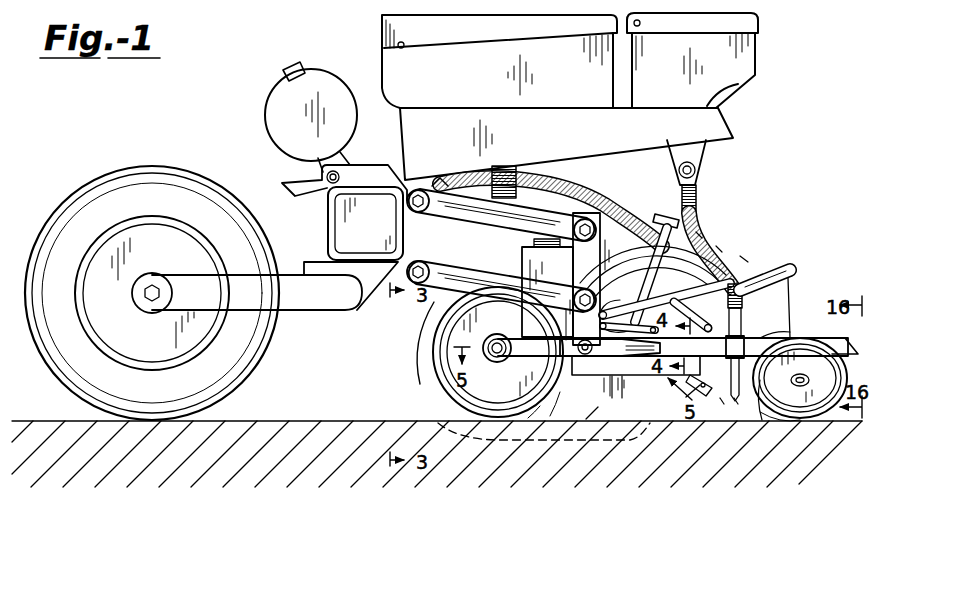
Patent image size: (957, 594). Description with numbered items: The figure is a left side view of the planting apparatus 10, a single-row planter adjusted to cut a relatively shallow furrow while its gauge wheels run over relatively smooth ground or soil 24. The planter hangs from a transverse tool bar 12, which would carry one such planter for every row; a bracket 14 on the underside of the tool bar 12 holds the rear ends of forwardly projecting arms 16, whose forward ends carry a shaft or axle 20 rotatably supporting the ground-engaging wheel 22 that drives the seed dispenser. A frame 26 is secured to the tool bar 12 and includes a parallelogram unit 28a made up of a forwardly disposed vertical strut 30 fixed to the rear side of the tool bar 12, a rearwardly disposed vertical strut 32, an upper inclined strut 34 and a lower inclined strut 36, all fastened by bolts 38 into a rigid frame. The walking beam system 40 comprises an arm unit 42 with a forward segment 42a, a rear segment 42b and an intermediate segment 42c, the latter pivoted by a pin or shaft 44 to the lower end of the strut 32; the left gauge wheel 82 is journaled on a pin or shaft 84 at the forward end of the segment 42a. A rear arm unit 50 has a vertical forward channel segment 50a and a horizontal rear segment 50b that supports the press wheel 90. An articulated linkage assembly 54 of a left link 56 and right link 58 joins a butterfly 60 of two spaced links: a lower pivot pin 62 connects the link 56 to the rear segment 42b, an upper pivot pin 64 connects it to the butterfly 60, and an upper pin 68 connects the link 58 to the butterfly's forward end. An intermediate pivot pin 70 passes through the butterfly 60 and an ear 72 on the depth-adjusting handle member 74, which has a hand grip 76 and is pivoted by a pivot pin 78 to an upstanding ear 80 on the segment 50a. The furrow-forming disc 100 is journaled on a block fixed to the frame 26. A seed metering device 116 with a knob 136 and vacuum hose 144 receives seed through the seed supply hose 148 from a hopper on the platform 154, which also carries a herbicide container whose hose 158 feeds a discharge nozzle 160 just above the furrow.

The planting apparatus 10 is at (352, 46).
The tool bar 12 is at (328, 222).
The bracket 14 is at (372, 306).
The forwardly projecting arms 16 is at (316, 308).
The shaft or axle 20 is at (160, 289).
The ground-engaging wheel 22 is at (75, 190).
The ground or soil 24 is at (250, 421).
The frame 26 is at (418, 294).
The parallelogram unit 28a is at (460, 184).
The forwardly disposed vertical strut 30 is at (428, 262).
The rearwardly disposed vertical strut 32 is at (566, 208).
The upper inclined strut 34 is at (504, 232).
The lower inclined strut 36 is at (455, 270).
The bolts 38 is at (404, 250).
The walking beam system 40 is at (602, 410).
The arm unit 42 is at (535, 377).
The forward segment or portion 42a is at (495, 368).
The rear segment or portion 42b is at (616, 398).
The intermediate segment or portion 42c is at (565, 425).
The pin or shaft 44 is at (592, 424).
The rear arm unit 50 is at (776, 334).
The forward channel portion or segment 50a is at (712, 423).
The rear segment or portion 50b is at (822, 338).
The articulated linkage assembly 54 is at (644, 288).
The left link 56 is at (728, 332).
The right link 58 is at (600, 226).
The butterfly 60 is at (740, 256).
The lower pivot pin 62 is at (616, 390).
The upper pivot pin 64 is at (680, 300).
The upper pin 68 is at (650, 232).
The intermediate pivot pin 70 is at (716, 246).
The ear 72 is at (696, 232).
The depth-adjusting handle member 74 is at (737, 274).
The hand grip 76 is at (790, 265).
The pivot pin 78 is at (576, 318).
The upstanding ear 80 is at (574, 340).
The left gauge wheel 82 is at (438, 372).
The pin or shaft 84 is at (498, 338).
The furrow-closing or press wheel 90 is at (768, 425).
The furrow-forming disc 100 is at (436, 332).
The seed metering device 116 is at (733, 404).
The knob 136 is at (702, 228).
The vacuum hose 144 is at (577, 200).
The seed supply hose 148 is at (522, 182).
The platform 154 is at (738, 85).
The hose 158 is at (700, 190).
The discharge nozzle 160 is at (722, 404).